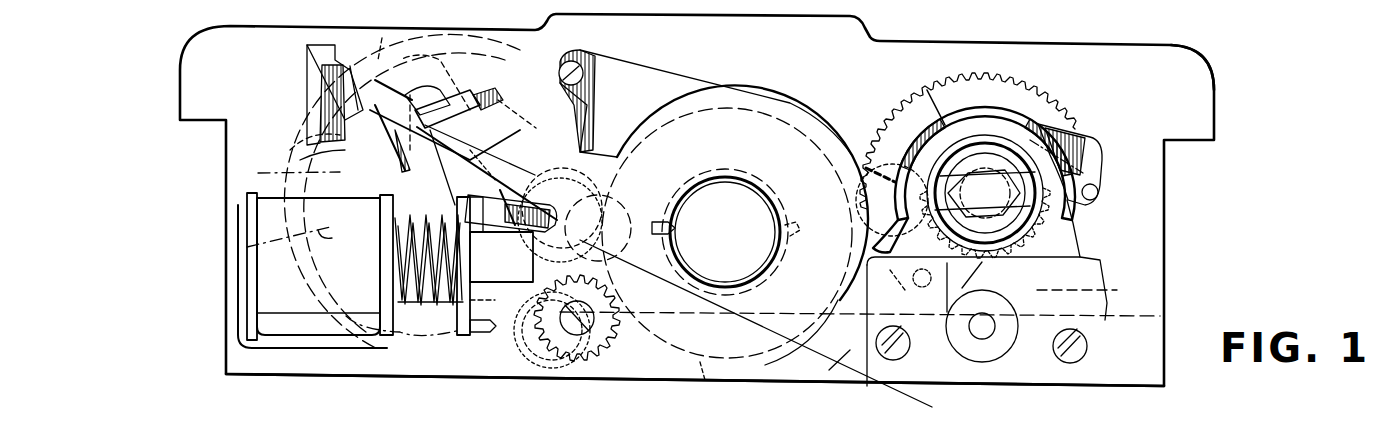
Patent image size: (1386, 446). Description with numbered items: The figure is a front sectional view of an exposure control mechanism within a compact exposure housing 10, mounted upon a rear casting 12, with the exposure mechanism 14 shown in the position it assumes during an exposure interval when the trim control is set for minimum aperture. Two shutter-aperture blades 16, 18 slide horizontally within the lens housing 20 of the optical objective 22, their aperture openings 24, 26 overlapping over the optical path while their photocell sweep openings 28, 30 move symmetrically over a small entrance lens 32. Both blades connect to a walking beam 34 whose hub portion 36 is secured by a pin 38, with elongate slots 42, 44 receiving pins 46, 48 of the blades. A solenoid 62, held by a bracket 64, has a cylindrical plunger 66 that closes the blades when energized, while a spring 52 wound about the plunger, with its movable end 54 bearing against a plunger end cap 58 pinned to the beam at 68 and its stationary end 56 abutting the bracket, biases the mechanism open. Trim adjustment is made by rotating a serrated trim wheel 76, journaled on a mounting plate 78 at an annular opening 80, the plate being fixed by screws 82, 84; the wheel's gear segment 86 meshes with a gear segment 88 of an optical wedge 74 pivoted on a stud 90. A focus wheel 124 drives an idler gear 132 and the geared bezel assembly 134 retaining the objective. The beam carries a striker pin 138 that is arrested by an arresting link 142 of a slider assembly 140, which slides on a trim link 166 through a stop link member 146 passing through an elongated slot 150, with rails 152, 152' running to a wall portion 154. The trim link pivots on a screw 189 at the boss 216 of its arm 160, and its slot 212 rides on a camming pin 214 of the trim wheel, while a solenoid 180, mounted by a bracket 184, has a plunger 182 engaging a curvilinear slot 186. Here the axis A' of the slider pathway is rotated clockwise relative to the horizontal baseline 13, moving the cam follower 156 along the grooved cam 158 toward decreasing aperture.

The exposure housing 10 is at (1013, 33).
The rear casting 12 is at (1215, 93).
The horizontal baseline 13 is at (1012, 386).
The exposure mechanism 14 is at (672, 140).
The trim link 166 is at (787, 101).
The optical objective 22 is at (722, 232).
The aperture opening 26 is at (652, 222).
The aperture opening 24 is at (800, 222).
The lever arm 160 is at (583, 127).
The boss 216 is at (545, 72).
The rivet or screw 189 is at (578, 60).
The trim wheel 76 is at (1030, 90).
The camming pin 214 is at (922, 112).
The optical wedge 74 is at (1030, 112).
The annular opening 80 is at (1065, 130).
The gear segment 86 is at (1068, 210).
The entrance lens 32 is at (985, 158).
The photocell sweep opening 28 is at (991, 229).
The elongated slot 212 is at (930, 240).
The photocell sweep opening 30 is at (964, 287).
The mounting plate 78 is at (1105, 270).
The gear segment 88 is at (1115, 305).
The stud 90 is at (985, 340).
The screw 84 is at (893, 360).
The screw 82 is at (1090, 348).
The lens housing 20 is at (770, 355).
The axis A' is at (825, 380).
The bezel assembly 134 is at (704, 380).
The shutter-aperture blade 16 is at (527, 355).
The elongate slot 42 is at (555, 360).
The pin 46 is at (580, 370).
The idler gear 132 is at (605, 345).
The hub portion 36 is at (575, 188).
The stop link member 146 is at (552, 190).
The solenoid 62 is at (284, 362).
The bracket 64 is at (267, 352).
The spring 52 is at (388, 337).
The spring 56 is at (396, 262).
The movable end 54 is at (465, 340).
The plunger end cap 58 is at (484, 334).
The cylindrical plunger 66 is at (432, 310).
The pin 68 is at (520, 312).
The pin 38 is at (490, 278).
The elongated slot 150 is at (540, 210).
The arresting link 142 is at (512, 146).
The follow-focus striker pin 138 is at (527, 122).
The shutter-aperture blade 18 is at (452, 222).
The pin 48 is at (408, 170).
The walking beam 34 is at (450, 92).
The elongate slot 44 is at (492, 92).
The slider assembly 140 is at (420, 100).
The wall portion 154 is at (410, 95).
The longitudinal rail 152 is at (452, 58).
The solenoid 180 is at (376, 30).
The curvilinear slot 186 is at (307, 48).
The bracket 184 is at (307, 78).
The plunger 182 is at (302, 101).
The cam follower 156 is at (292, 150).
The focus wheel 124 is at (258, 173).
The grooved cam 158 is at (250, 247).
The longitudinal rail 152' is at (389, 279).